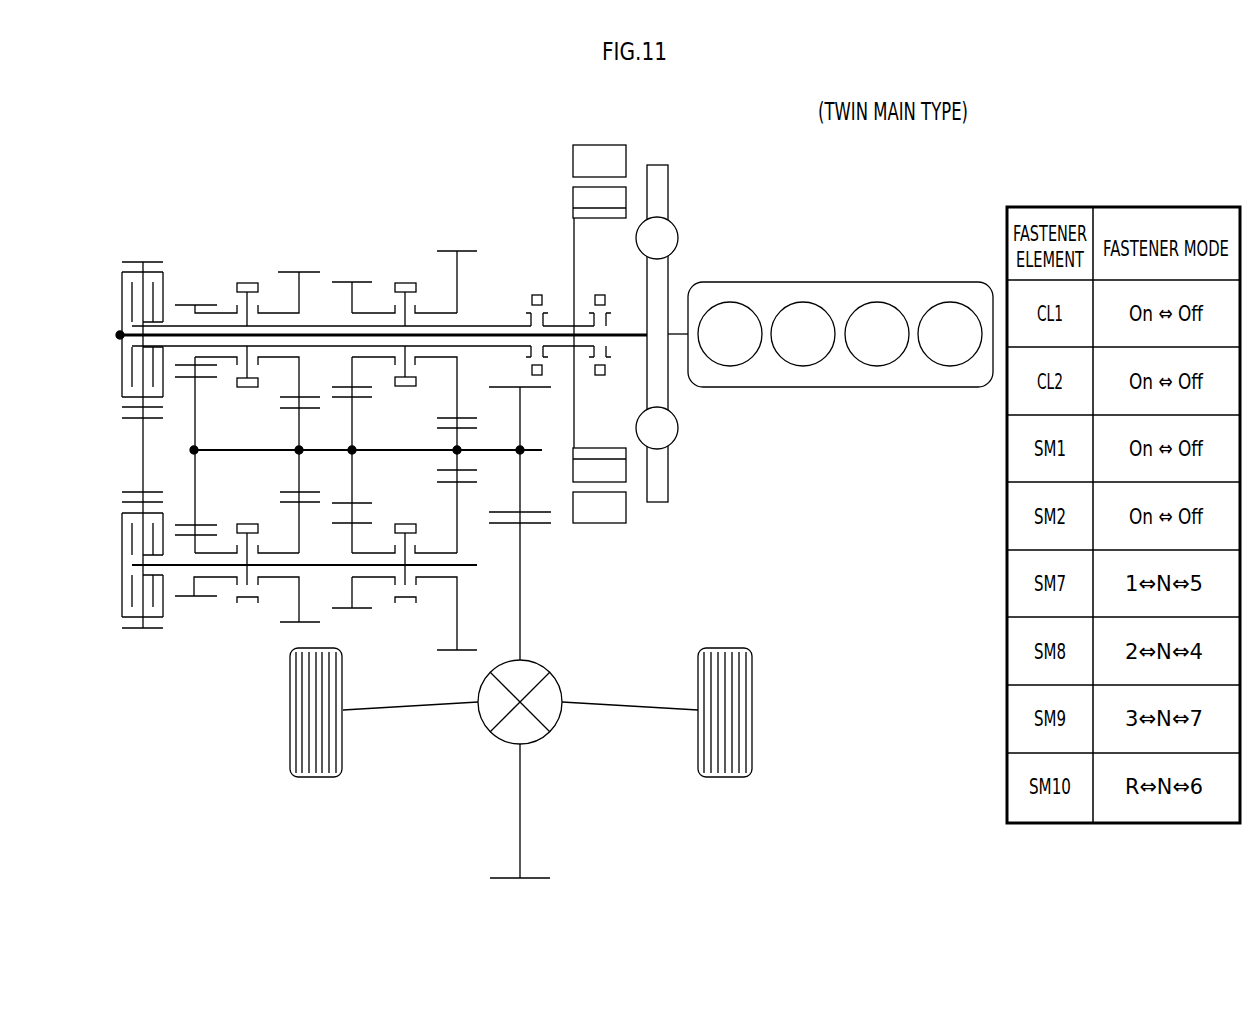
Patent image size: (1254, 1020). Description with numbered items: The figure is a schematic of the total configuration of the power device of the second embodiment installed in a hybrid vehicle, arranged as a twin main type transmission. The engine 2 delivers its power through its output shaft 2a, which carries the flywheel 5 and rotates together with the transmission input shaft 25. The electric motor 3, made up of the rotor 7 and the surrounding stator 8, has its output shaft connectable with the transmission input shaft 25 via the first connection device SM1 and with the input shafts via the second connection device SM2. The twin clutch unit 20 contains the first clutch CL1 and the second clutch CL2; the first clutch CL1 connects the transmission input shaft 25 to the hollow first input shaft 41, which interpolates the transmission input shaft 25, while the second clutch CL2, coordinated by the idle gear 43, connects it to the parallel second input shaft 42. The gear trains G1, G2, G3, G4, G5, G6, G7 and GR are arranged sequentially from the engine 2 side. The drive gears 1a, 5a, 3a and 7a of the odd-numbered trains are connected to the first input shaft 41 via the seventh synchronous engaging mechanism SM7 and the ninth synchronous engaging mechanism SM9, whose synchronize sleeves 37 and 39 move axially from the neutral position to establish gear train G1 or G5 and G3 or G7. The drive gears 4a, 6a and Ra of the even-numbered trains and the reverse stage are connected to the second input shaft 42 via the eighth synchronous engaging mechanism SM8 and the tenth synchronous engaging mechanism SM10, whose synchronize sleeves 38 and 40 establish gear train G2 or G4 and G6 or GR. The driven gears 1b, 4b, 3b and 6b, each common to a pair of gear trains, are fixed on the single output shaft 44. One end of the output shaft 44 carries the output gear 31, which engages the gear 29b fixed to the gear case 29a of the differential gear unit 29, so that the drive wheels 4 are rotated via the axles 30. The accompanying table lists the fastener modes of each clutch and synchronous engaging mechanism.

The engine 2 is at (760, 282).
The output shaft 2a is at (677, 332).
The electric motor 3 is at (586, 139).
The drive wheels 4 is at (343, 764).
The flywheel 5 is at (656, 165).
The rotor 7 is at (573, 198).
The stator 8 is at (573, 160).
The twin clutch unit 20 is at (142, 256).
The transmission input shaft 25 is at (486, 326).
The differential gear unit 29 is at (551, 662).
The gear case 29a is at (562, 682).
The gear 29b is at (523, 613).
The axles 30 is at (406, 712).
The output gear 31 is at (524, 481).
The synchronize sleeve 37 is at (248, 388).
The synchronize sleeve 38 is at (254, 522).
The synchronize sleeve 39 is at (405, 387).
The synchronize sleeve 40 is at (405, 522).
The first input shaft 41 is at (326, 326).
The second input shaft 42 is at (470, 564).
The idle gear 43 is at (140, 440).
The output shaft 44 is at (238, 453).
The first clutch CL1 is at (125, 329).
The second clutch CL2 is at (125, 570).
The first connection device SM1 is at (600, 320).
The second connection device SM2 is at (536, 320).
The seventh synchronous engaging mechanism SM7 is at (248, 290).
The eighth synchronous engaging mechanism SM8 is at (246, 600).
The ninth synchronous engaging mechanism SM9 is at (405, 290).
The tenth synchronous engaging mechanism SM10 is at (407, 600).
The first gear train G1 is at (196, 290).
The second gear train G2 is at (196, 613).
The third gear train G3 is at (352, 283).
The fourth gear train G4 is at (300, 636).
The fifth gear train G5 is at (289, 278).
The sixth gear train G6 is at (457, 662).
The seventh gear train G7 is at (457, 268).
The reverse gear train GR is at (352, 606).
The drive gear 1a is at (216, 301).
The driven gear 1b is at (206, 455).
The drive gear 3a is at (373, 301).
The driven gear 3b is at (363, 455).
The drive gear 4a is at (291, 599).
The driven gear 4b is at (302, 501).
The drive gear 5a is at (291, 396).
The drive gear 6a is at (436, 613).
The driven gear 6b is at (470, 466).
The drive gear 7a is at (446, 303).
The drive gear Ra is at (373, 591).